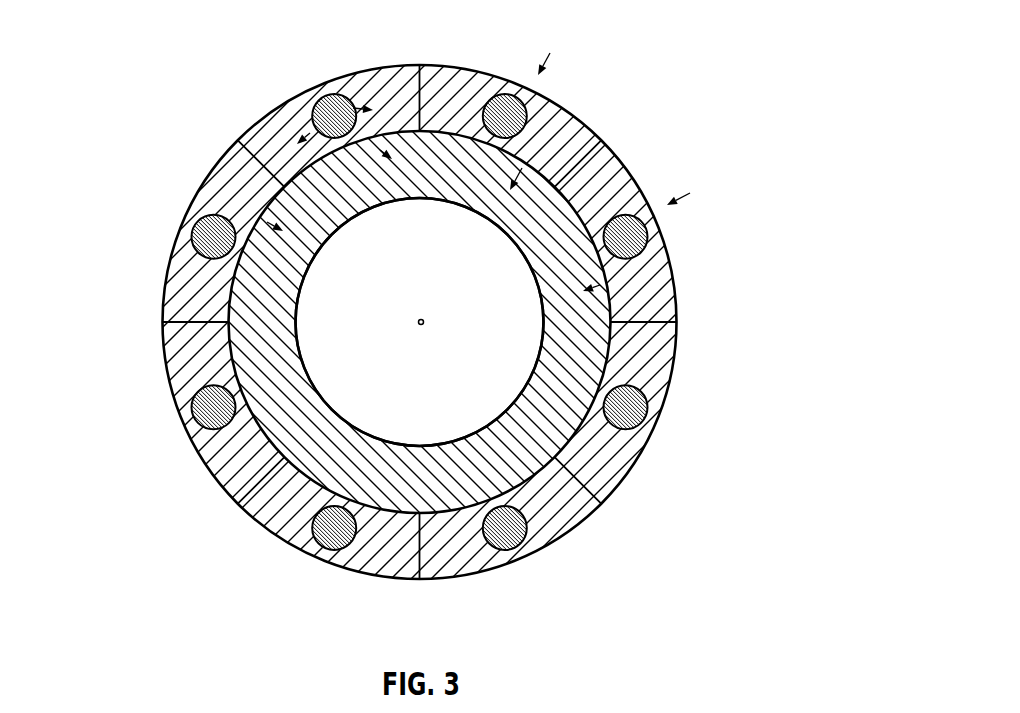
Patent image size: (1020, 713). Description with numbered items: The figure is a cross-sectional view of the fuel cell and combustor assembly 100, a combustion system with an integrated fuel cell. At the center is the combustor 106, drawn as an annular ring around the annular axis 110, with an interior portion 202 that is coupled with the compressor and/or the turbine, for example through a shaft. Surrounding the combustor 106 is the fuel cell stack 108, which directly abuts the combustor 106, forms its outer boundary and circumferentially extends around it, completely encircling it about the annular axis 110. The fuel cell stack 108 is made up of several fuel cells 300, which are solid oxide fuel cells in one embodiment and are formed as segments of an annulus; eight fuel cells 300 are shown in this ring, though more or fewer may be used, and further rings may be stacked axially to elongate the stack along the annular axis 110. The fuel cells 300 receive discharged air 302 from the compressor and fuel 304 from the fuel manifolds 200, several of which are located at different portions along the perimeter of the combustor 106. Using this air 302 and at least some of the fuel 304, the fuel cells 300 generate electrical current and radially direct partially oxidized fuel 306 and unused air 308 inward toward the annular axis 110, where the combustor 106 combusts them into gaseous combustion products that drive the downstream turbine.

The fuel cell and combustor assembly 100 is at (717, 28).
The combustor 106 is at (287, 347).
The fuel cell stack 108 is at (605, 543).
The annular axis 110 is at (424, 318).
The fuel manifold 200 is at (195, 403).
The interior portion 202 is at (500, 359).
The fuel cell 300 is at (708, 329).
The discharged air 302 is at (311, 60).
The fuel 304 is at (354, 109).
The partially oxidized fuel 306 is at (380, 151).
The unused air 308 is at (330, 222).